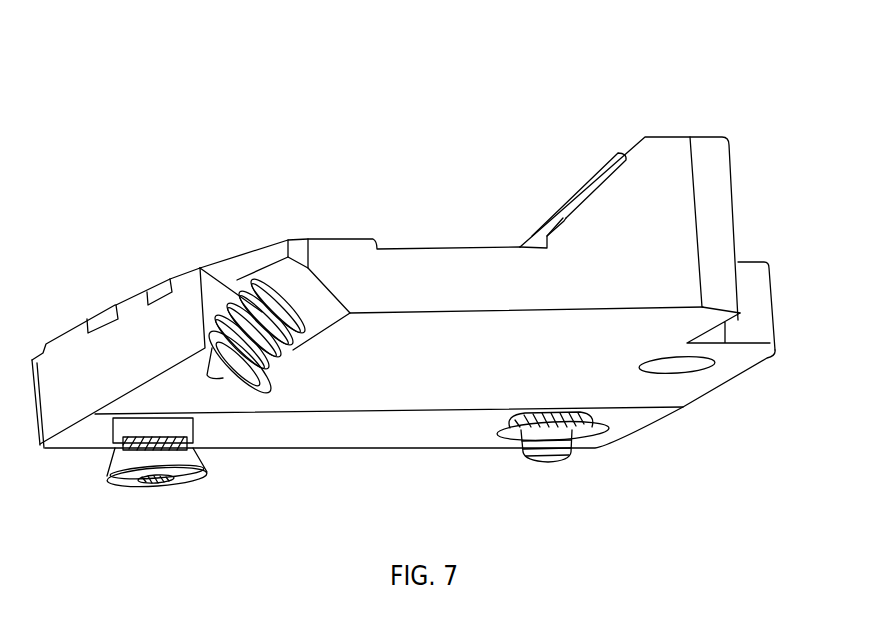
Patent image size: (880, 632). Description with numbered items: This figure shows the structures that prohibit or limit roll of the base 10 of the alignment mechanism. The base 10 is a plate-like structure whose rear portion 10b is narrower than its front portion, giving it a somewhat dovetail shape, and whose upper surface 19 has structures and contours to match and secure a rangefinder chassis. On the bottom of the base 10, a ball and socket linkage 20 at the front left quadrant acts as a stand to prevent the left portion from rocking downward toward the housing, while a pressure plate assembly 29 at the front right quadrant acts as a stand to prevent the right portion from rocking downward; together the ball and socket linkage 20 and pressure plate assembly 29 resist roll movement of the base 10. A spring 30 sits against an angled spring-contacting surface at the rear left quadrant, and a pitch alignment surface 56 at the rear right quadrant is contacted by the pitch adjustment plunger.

The base 10 is at (432, 279).
The rear portion 10b is at (648, 284).
The upper surface 19 is at (365, 382).
The ball and socket linkage 20 is at (193, 527).
The pressure plate assembly 29 is at (572, 490).
The spring 30 is at (237, 298).
The pitch alignment surface 56 is at (678, 134).